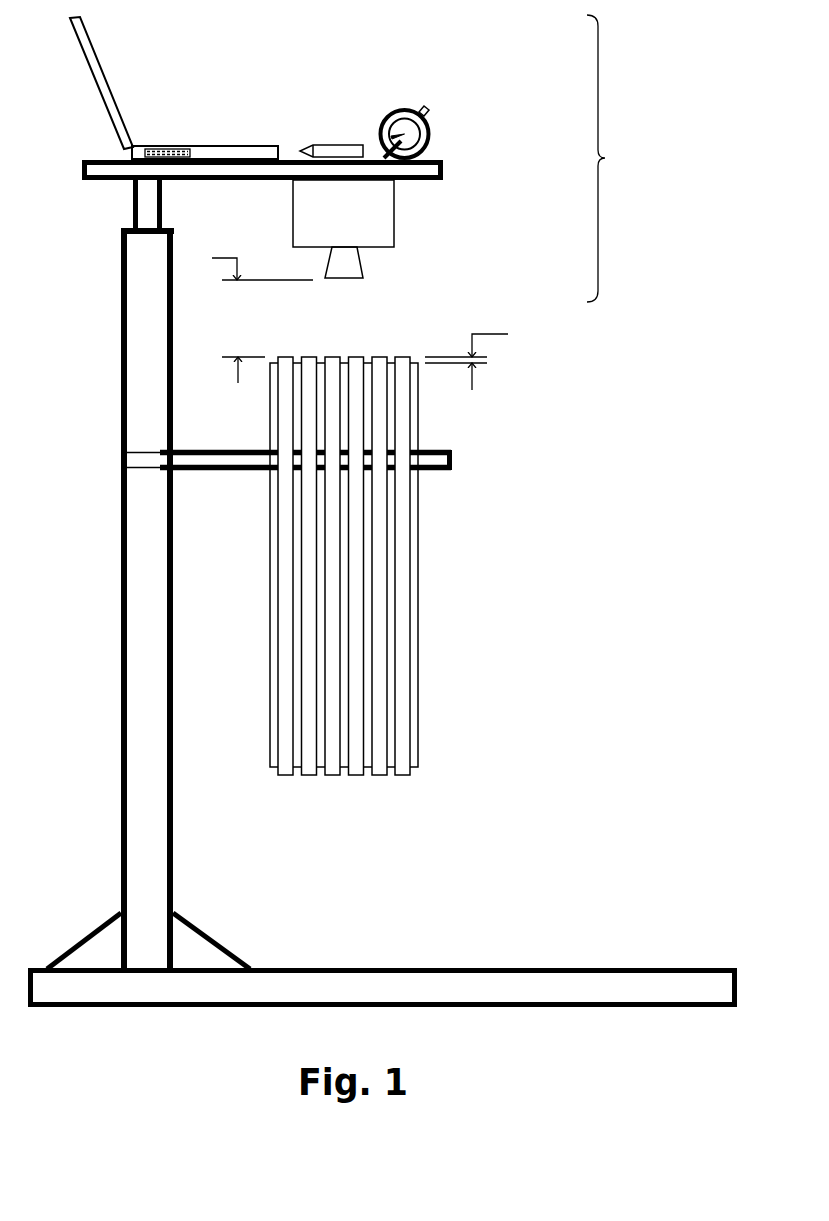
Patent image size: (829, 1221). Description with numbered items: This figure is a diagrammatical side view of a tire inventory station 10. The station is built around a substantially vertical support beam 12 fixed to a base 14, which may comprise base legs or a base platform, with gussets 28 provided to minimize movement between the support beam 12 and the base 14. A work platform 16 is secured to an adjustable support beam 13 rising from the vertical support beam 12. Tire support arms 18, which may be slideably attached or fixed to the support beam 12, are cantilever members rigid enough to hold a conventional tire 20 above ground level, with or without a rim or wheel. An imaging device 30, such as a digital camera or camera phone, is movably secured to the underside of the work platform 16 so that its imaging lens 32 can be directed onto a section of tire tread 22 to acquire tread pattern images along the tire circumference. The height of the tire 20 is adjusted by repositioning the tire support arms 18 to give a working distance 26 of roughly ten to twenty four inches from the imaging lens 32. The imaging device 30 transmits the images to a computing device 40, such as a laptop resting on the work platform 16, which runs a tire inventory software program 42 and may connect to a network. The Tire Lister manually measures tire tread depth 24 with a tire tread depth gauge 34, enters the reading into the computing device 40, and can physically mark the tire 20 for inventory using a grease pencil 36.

The tire inventory station 10 is at (611, 158).
The vertical support beam 12 is at (121, 437).
The adjustable support beam 13 is at (132, 207).
The base 14 is at (510, 969).
The work platform 16 is at (443, 177).
The tire support arms 18 is at (235, 473).
The tire 20 is at (417, 732).
The tire tread 22 is at (412, 775).
The tire tread depth 24 is at (478, 357).
The working distance 26 is at (249, 316).
The gussets 28 is at (205, 937).
The imaging device 30 is at (397, 212).
The imaging lens 32 is at (365, 269).
The tire tread depth gauge 34 is at (393, 113).
The grease pencil 36 is at (317, 145).
The computing device 40 is at (212, 145).
The tire inventory software program 42 is at (167, 147).